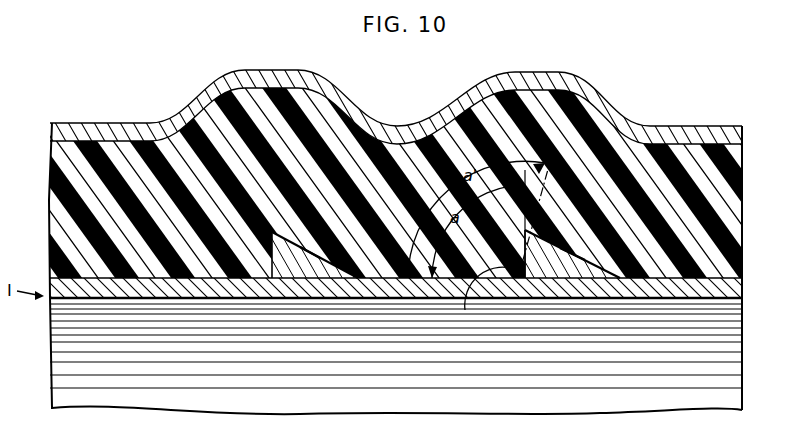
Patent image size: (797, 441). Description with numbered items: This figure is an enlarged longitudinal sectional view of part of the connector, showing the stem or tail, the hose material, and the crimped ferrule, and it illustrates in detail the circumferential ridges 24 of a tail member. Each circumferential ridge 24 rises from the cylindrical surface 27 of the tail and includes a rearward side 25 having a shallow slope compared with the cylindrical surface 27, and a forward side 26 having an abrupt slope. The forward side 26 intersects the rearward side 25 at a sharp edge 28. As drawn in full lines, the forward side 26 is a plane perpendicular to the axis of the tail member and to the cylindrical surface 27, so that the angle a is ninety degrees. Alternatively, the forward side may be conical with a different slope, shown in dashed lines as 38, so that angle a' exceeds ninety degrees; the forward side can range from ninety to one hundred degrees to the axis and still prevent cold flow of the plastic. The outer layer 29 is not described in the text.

The circumferential ridge 24 is at (305, 262).
The rearward side 25 is at (310, 250).
The forward side 26 is at (524, 246).
The cylindrical surface 27 is at (385, 278).
The sharp edge 28 is at (272, 240).
The top cover layer 29 is at (328, 82).
The conical forward side 38 is at (479, 300).